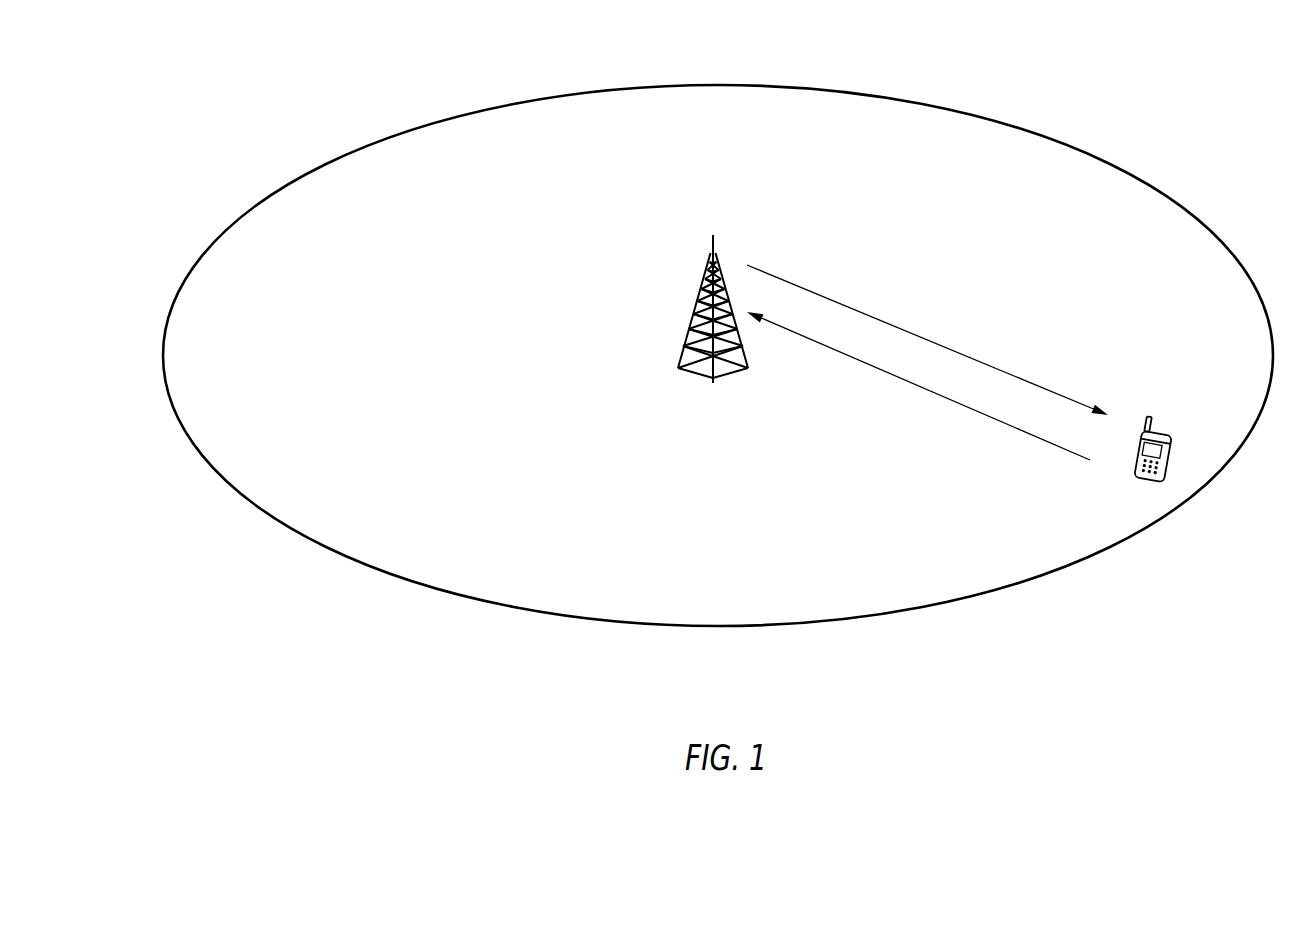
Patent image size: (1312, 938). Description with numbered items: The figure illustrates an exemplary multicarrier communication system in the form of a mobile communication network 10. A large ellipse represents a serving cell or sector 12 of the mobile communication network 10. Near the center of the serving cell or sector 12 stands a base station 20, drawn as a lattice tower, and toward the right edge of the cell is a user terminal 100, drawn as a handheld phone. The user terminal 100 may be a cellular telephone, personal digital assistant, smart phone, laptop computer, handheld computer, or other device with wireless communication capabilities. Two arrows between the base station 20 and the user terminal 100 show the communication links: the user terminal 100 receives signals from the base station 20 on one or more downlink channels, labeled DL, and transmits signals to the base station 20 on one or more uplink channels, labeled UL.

The mobile communication network 10 is at (1096, 53).
The serving cell or sector 12 is at (1142, 178).
The base station 20 is at (708, 278).
The user terminal 100 is at (1165, 430).